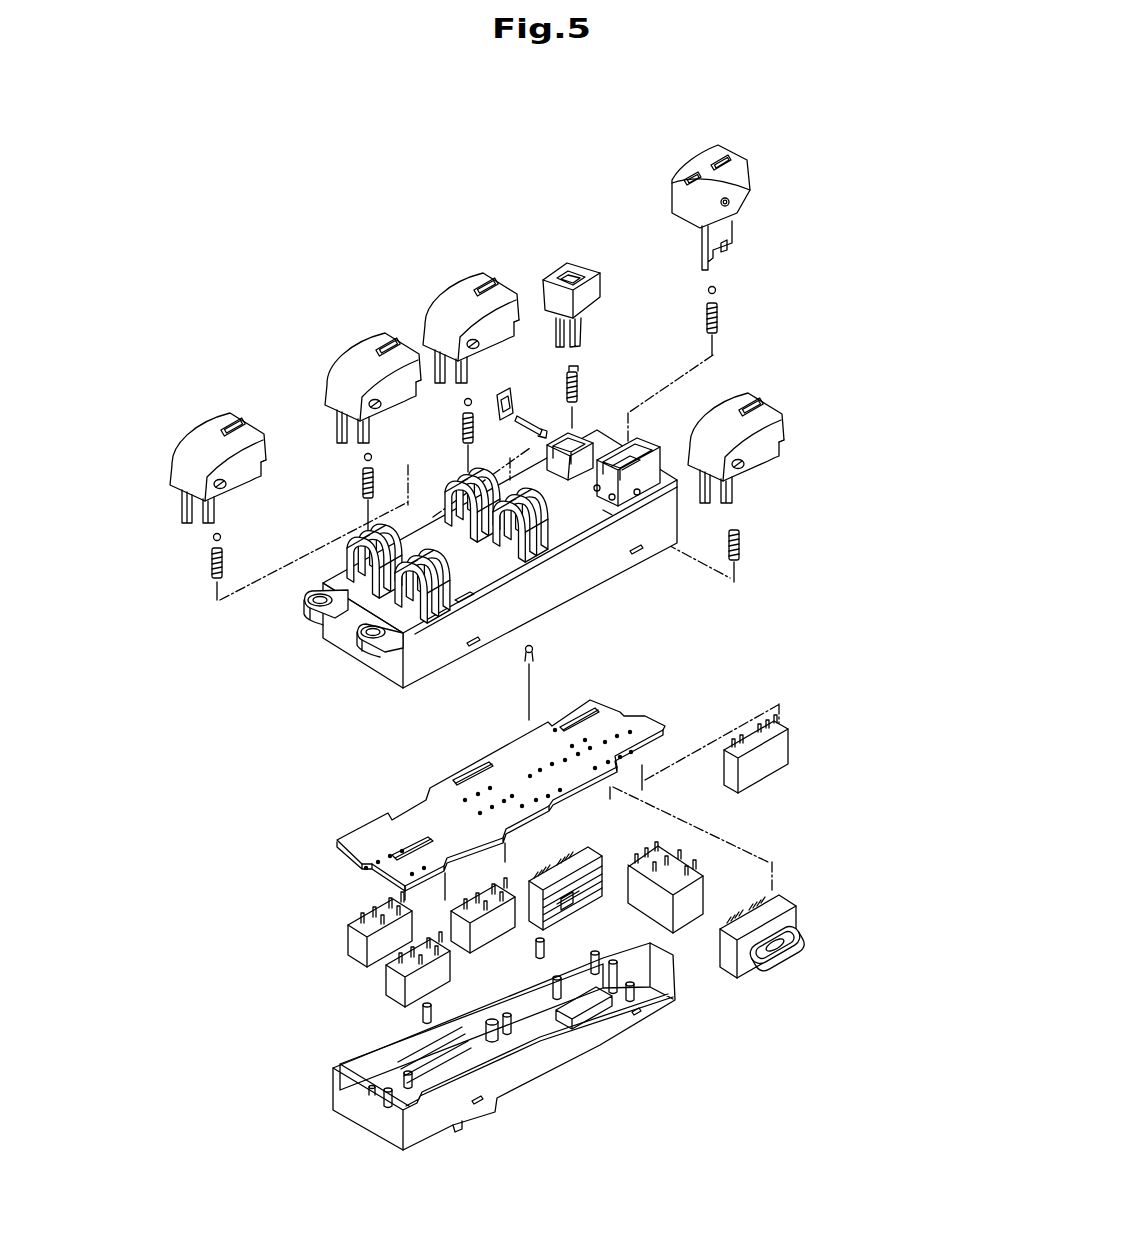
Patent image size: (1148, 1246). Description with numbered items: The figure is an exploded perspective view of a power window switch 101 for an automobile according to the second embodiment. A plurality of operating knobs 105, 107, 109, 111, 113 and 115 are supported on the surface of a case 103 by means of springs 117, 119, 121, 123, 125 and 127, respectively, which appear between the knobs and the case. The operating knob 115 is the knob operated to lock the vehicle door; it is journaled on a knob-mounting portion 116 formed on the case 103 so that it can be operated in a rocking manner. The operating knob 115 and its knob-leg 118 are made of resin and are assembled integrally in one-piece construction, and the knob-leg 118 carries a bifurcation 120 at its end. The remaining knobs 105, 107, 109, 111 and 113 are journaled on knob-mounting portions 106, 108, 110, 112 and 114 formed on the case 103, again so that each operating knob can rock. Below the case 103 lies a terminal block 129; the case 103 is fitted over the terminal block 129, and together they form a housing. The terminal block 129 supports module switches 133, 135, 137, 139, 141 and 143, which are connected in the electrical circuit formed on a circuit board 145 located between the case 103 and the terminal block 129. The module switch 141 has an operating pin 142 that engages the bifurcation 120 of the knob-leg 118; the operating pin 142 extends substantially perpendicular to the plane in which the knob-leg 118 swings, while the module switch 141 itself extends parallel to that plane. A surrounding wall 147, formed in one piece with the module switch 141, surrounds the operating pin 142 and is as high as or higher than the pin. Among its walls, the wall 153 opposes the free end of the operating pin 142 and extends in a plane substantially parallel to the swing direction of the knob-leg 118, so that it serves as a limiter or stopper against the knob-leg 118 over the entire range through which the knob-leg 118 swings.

The power window switch 101 is at (506, 609).
The case 103 is at (372, 665).
The operating knob 105 is at (388, 332).
The knob-mounting portion 106 is at (347, 542).
The operating knob 107 is at (240, 410).
The knob-mounting portion 108 is at (438, 590).
The operating knob 109 is at (484, 268).
The knob-mounting portion 110 is at (455, 487).
The operating knob 111 is at (765, 400).
The knob-mounting portion 112 is at (537, 537).
The operating knob 113 is at (575, 255).
The knob-mounting portion 114 is at (597, 432).
The operating knob 115 is at (739, 177).
The knob-mounting portion 116 is at (660, 455).
The spring 117 is at (212, 568).
The knob-leg 118 is at (733, 223).
The spring 119 is at (360, 491).
The bifurcation 120 is at (730, 250).
The spring 121 is at (462, 435).
The spring 123 is at (743, 551).
The spring 125 is at (582, 365).
The spring 127 is at (720, 322).
The terminal block 129 is at (327, 1092).
The module switch 133 is at (350, 940).
The module switch 135 is at (392, 990).
The module switch 137 is at (482, 925).
The module switch 139 is at (588, 862).
The module switch 141 is at (789, 955).
The operating pin 142 is at (800, 943).
The module switch 143 is at (768, 773).
The circuit board 145 is at (594, 693).
The surrounding wall 147 is at (793, 978).
The wall 153 is at (783, 967).